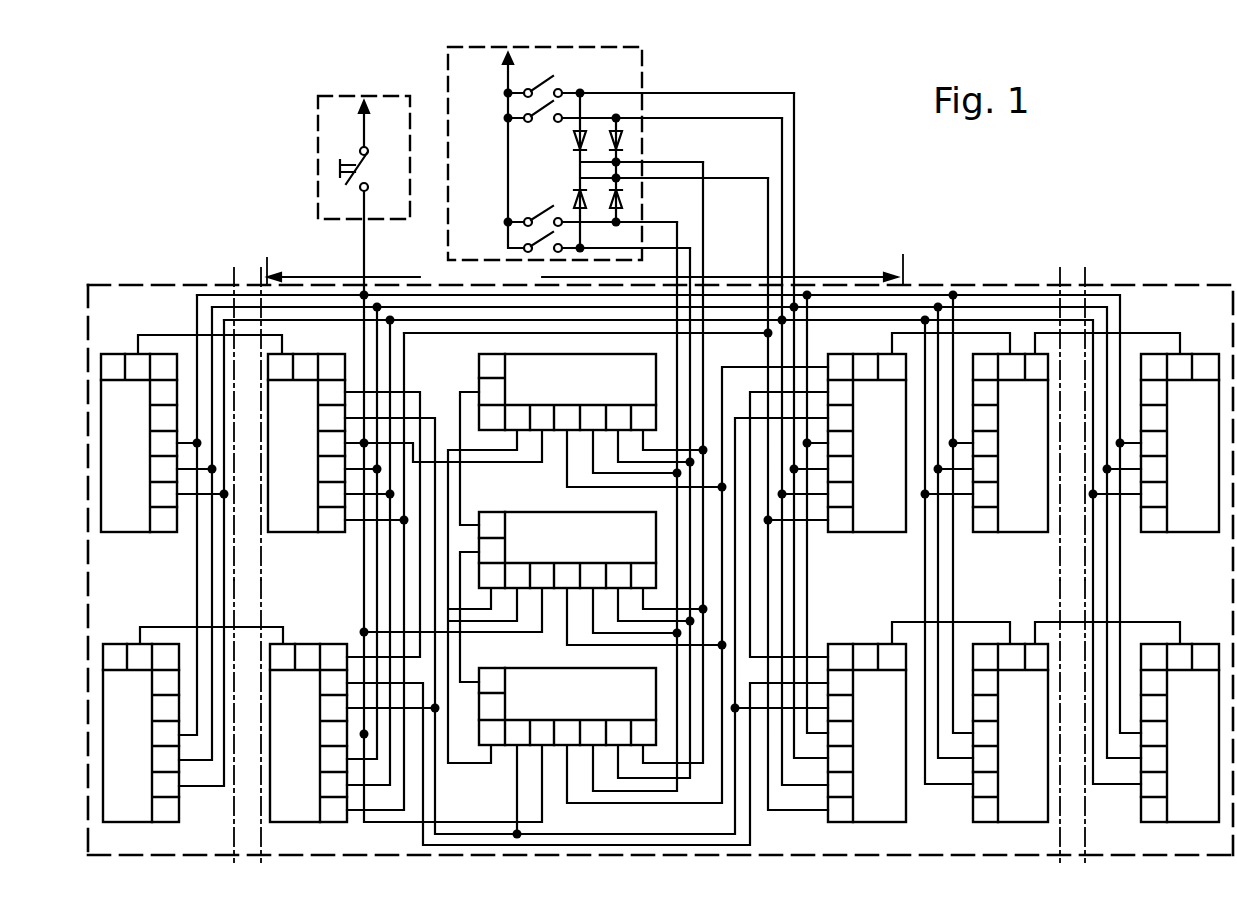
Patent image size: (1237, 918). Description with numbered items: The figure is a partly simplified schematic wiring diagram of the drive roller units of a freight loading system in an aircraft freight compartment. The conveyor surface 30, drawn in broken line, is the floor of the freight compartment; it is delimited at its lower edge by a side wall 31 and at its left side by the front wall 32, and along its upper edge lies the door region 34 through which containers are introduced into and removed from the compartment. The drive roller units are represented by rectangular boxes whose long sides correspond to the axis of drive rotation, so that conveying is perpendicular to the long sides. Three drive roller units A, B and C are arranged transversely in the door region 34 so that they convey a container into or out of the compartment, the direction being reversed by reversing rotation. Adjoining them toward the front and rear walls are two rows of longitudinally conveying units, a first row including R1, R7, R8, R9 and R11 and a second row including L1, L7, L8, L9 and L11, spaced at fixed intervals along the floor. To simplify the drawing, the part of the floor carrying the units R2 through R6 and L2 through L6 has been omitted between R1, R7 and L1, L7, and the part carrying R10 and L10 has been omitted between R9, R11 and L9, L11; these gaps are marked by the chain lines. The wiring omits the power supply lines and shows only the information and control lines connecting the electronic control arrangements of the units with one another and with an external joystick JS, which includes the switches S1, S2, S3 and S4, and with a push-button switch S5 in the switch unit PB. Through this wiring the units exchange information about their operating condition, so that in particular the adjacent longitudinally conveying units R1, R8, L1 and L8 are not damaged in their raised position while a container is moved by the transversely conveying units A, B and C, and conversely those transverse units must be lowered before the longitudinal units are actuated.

The conveyor surface 30 is at (1166, 283).
The side wall 31 is at (868, 855).
The front wall 32 is at (88, 600).
The door region 34 is at (386, 277).
The switch unit PB is at (361, 140).
The joystick JS is at (621, 153).
The switch S1 is at (522, 226).
The switch S2 is at (555, 208).
The switch S3 is at (548, 130).
The switch S4 is at (551, 80).
The push-button switch S5 is at (366, 165).
The drive roller unit A is at (559, 391).
The drive roller unit B is at (559, 550).
The drive roller unit C is at (559, 707).
The drive roller unit R1 is at (307, 461).
The drive roller unit R7 is at (139, 461).
The drive roller unit R8 is at (894, 461).
The drive roller unit R9 is at (1037, 461).
The drive roller unit R11 is at (1176, 461).
The drive roller unit L1 is at (309, 751).
The drive roller unit L7 is at (141, 751).
The drive roller unit L8 is at (894, 751).
The drive roller unit L9 is at (1037, 751).
The drive roller unit L11 is at (1176, 751).
The drive roller unit R2 is at (240, 424).
The drive roller unit R6 is at (245, 424).
The drive roller unit R10 is at (1070, 424).
The drive roller unit L2 is at (240, 721).
The drive roller unit L6 is at (245, 721).
The drive roller unit L10 is at (1070, 721).